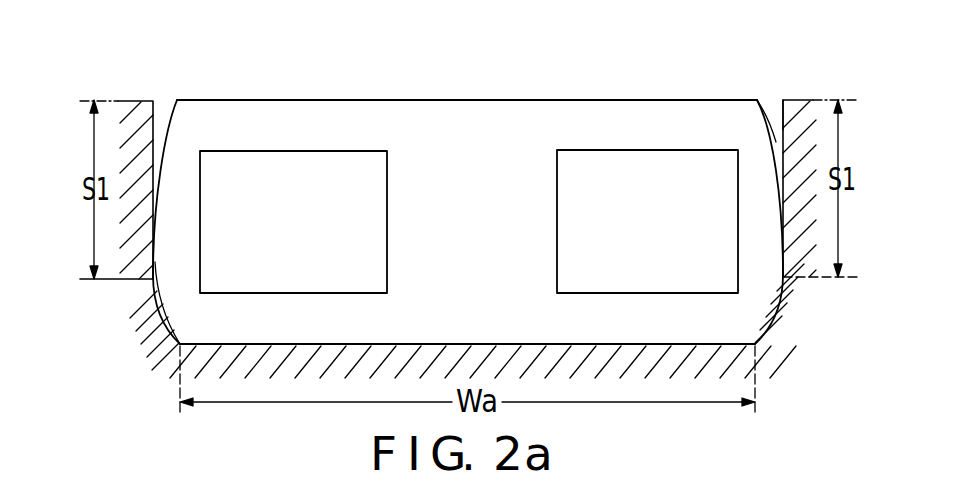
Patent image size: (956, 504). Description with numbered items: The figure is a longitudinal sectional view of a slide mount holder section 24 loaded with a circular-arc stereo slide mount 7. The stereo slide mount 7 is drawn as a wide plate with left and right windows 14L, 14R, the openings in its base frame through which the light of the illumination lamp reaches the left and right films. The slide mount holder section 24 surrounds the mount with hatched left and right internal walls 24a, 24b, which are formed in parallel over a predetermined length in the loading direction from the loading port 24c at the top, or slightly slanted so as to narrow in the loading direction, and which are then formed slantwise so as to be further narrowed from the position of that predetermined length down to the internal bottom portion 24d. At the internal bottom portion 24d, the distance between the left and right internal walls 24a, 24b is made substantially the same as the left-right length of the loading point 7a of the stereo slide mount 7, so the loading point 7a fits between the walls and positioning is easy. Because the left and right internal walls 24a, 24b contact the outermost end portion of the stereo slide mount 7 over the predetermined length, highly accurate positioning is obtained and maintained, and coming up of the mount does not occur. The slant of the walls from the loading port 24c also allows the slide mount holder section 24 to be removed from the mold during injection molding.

The stereo slide mount 7 is at (443, 112).
The loading point 7a is at (492, 344).
The left window 14L is at (262, 151).
The right window 14R is at (638, 150).
The slide mount holder section 24 is at (781, 120).
The left internal wall 24a is at (155, 108).
The right internal wall 24b is at (781, 142).
The loading port 24c is at (784, 102).
The internal bottom portion 24d is at (425, 343).